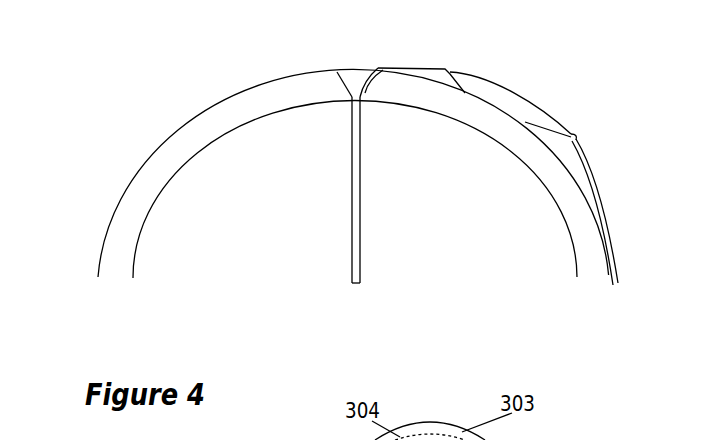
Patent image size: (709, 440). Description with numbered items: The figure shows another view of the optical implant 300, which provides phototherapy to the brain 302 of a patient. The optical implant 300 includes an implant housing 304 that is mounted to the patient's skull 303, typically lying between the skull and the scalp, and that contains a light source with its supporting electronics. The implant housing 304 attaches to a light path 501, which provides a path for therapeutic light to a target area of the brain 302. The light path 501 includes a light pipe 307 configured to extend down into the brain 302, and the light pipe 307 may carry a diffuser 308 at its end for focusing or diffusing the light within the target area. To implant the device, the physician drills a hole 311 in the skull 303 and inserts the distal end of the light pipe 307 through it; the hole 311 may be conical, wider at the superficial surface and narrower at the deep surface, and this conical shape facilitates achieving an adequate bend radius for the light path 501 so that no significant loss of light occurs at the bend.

The optical implant 300 is at (493, 75).
The brain 302 is at (355, 189).
The skull 303 is at (170, 163).
The implant housing 304 is at (527, 122).
The light pipe 307 is at (357, 210).
The diffuser 308 is at (352, 284).
The hole 311 is at (337, 72).
The light path 501 is at (403, 60).